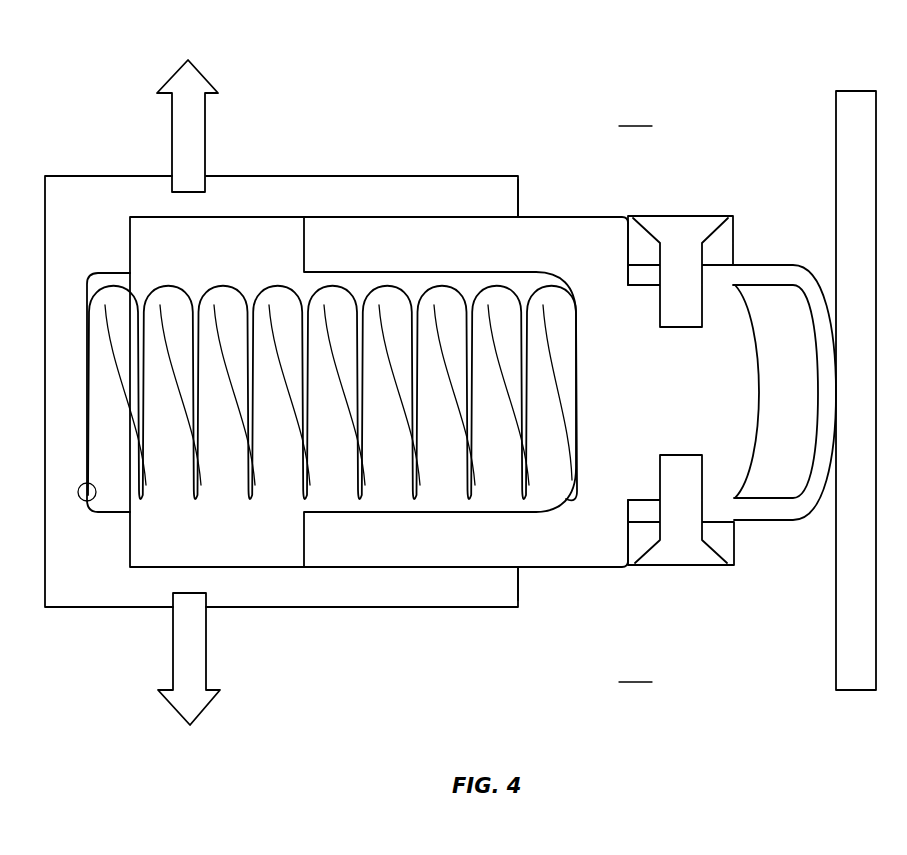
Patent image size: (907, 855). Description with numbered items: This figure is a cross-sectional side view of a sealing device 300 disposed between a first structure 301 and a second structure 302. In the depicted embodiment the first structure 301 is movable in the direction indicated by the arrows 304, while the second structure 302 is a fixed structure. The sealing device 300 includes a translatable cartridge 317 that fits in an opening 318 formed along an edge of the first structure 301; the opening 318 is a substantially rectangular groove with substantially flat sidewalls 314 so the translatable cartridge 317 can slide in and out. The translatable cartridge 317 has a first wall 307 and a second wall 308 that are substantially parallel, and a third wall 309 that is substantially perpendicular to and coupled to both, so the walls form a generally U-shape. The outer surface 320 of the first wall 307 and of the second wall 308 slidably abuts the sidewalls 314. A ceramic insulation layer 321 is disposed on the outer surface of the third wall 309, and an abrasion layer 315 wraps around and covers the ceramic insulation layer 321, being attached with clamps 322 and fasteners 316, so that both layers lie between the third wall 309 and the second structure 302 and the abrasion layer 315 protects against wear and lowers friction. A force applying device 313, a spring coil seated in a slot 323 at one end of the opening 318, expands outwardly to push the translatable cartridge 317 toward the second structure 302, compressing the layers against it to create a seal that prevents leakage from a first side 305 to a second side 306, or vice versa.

The sealing device 300 is at (70, 49).
The first structure 301 is at (300, 192).
The second structure 302 is at (853, 103).
The arrows 304 is at (185, 81).
The first side 305 is at (635, 672).
The second side 306 is at (635, 116).
The first wall 307 is at (408, 242).
The second wall 308 is at (408, 540).
The third wall 309 is at (620, 355).
The force applying device 313 is at (197, 490).
The sidewalls 314 is at (234, 217).
The abrasion layer 315 is at (755, 523).
The fasteners 316 is at (683, 552).
The translatable cartridge 317 is at (553, 247).
The opening 318 is at (240, 540).
The outer surface 320 is at (537, 215).
The ceramic insulation layer 321 is at (784, 342).
The clamps 322 is at (727, 230).
The slot 323 is at (112, 498).